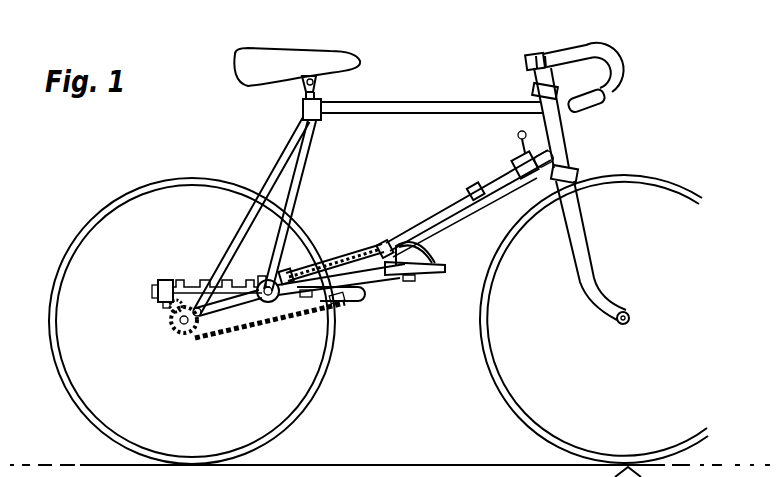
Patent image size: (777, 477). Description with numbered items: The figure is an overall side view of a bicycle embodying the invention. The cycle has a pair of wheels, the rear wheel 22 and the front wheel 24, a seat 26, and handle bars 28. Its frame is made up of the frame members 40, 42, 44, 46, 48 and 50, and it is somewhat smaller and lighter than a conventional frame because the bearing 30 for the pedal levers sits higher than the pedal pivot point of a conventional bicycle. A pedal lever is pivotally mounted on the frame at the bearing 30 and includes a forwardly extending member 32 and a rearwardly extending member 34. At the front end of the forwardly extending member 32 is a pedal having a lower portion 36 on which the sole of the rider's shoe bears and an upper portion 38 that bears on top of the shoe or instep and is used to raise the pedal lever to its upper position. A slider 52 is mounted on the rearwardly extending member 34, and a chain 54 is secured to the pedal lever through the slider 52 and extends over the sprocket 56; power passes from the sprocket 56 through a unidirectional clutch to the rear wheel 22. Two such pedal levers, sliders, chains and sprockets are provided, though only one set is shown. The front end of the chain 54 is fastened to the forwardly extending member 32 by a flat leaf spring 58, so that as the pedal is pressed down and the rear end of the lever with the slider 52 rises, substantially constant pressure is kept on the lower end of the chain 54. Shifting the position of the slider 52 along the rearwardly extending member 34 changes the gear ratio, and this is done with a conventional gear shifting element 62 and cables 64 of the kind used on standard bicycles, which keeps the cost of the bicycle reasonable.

The rear wheel 22 is at (82, 228).
The front wheel 24 is at (667, 172).
The seat 26 is at (295, 49).
The handle bars 28 is at (612, 53).
The bearing 30 is at (271, 302).
The forwardly extending member 32 is at (340, 263).
The rearwardly extending member 34 is at (187, 278).
The lower portion 36 is at (427, 271).
The upper portion 38 is at (427, 250).
The frame member 40 is at (440, 100).
The frame member 42 is at (330, 144).
The frame member 44 is at (278, 160).
The frame member 46 is at (230, 309).
The frame member 48 is at (512, 192).
The frame member 50 is at (572, 146).
The slider 52 is at (158, 282).
The chain 54 is at (300, 313).
The sprocket 56 is at (189, 336).
The flat leaf spring 58 is at (367, 301).
The gear shifting element 62 is at (515, 158).
The cables 64 is at (366, 260).